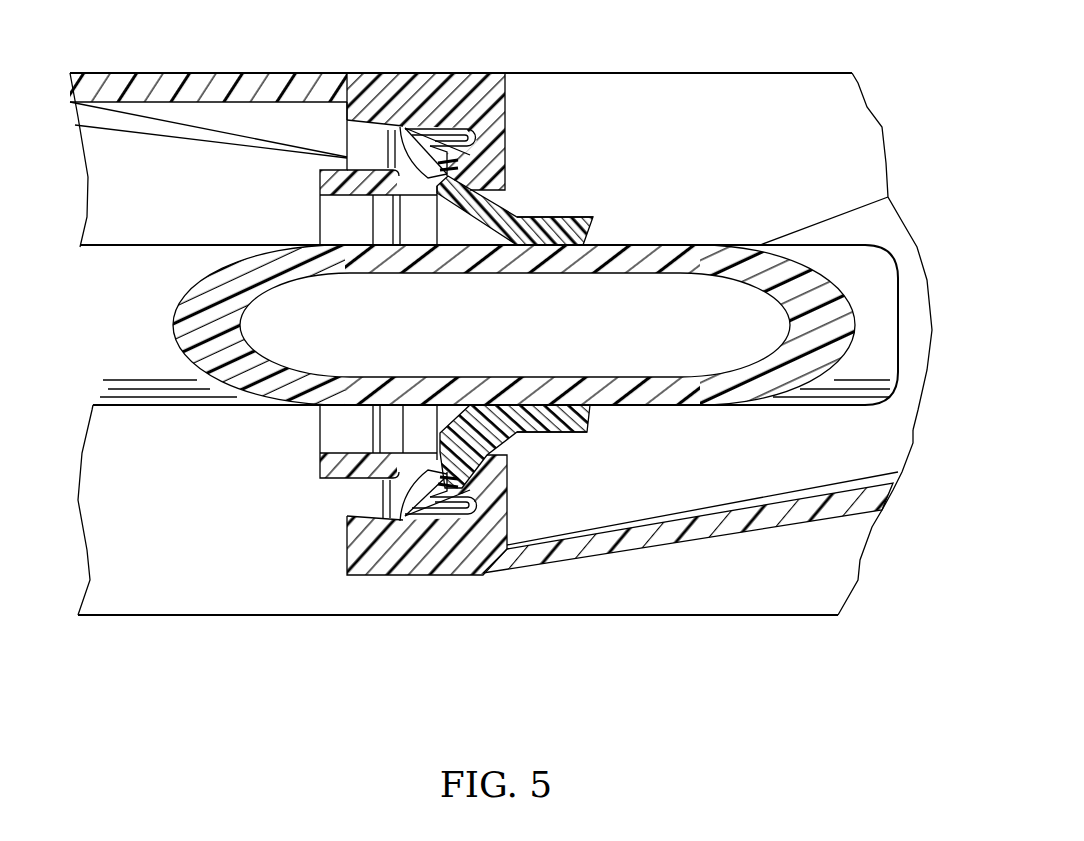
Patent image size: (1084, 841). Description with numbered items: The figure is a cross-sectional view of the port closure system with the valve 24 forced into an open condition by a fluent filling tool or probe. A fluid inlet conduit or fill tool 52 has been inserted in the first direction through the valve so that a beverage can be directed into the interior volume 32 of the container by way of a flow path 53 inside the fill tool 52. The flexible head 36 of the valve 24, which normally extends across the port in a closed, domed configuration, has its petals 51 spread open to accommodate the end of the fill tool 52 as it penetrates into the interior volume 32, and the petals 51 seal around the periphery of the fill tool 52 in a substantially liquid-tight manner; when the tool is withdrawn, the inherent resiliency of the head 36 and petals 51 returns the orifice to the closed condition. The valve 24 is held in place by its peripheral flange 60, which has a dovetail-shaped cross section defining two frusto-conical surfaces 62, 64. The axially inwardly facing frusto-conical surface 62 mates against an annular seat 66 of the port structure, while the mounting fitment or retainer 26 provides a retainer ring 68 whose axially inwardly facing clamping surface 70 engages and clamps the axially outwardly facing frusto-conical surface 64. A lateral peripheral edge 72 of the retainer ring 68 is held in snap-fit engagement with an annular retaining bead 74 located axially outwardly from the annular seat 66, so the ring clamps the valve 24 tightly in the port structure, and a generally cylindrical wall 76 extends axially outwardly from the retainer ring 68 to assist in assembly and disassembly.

The valve 24 is at (517, 193).
The mounting fitment or retainer 26 is at (306, 219).
The interior volume 32 is at (756, 92).
The head 36 is at (510, 443).
The petals 51 is at (565, 219).
The fill tool 52 is at (167, 420).
The flow path 53 is at (310, 352).
The flange 60 is at (475, 168).
The frusto-conical surface 62 is at (470, 491).
The frusto-conical surface 64 is at (402, 127).
The annular seat 66 is at (434, 470).
The retainer ring 68 is at (383, 147).
The clamping surface 70 is at (436, 165).
The lateral peripheral edge 72 is at (371, 577).
The annular retaining bead 74 is at (402, 521).
The cylindrical wall 76 is at (320, 462).